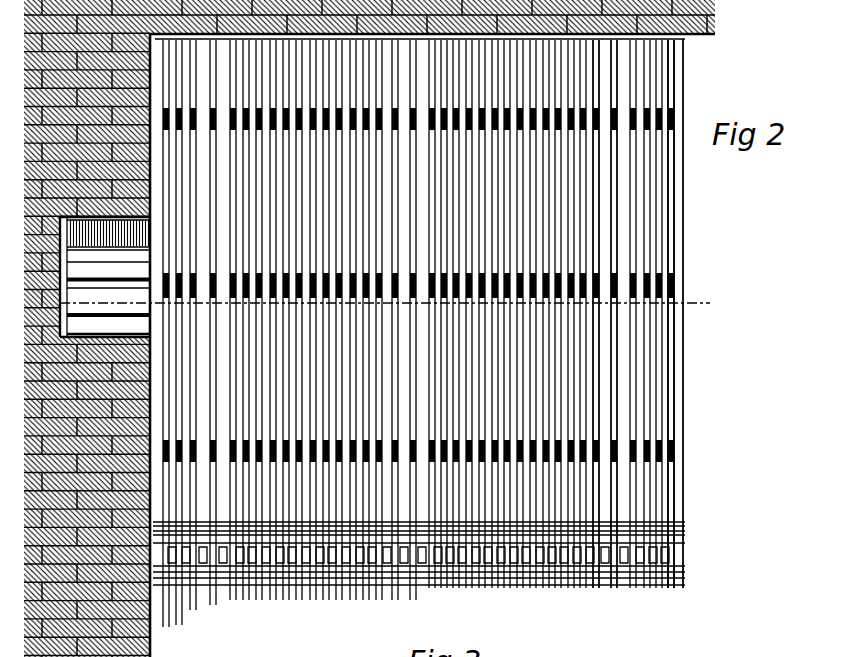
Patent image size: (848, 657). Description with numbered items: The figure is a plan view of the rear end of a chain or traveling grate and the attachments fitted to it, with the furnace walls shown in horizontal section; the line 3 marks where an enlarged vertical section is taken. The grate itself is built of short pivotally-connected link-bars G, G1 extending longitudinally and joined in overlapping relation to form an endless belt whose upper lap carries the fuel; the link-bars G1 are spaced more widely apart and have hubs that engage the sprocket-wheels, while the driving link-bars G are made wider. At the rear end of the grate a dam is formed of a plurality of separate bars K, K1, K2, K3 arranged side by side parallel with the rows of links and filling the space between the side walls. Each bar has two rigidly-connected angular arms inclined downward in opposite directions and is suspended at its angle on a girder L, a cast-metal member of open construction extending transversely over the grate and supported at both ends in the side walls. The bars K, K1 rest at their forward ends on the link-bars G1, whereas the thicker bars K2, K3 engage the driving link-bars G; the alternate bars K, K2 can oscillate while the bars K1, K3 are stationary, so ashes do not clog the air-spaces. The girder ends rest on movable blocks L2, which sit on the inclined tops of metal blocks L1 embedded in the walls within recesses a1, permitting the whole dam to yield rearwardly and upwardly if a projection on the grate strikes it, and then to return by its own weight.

The bar K is at (587, 512).
The bar K1 is at (676, 489).
The bar K2 is at (623, 371).
The bar K3 is at (603, 422).
The link-bar G is at (422, 587).
The link-bar G1 is at (527, 579).
The girder L is at (120, 290).
The metal block L1 is at (121, 233).
The movable block L2 is at (82, 253).
The recess a1 is at (99, 216).
The section line 3- 3 is at (379, 288).